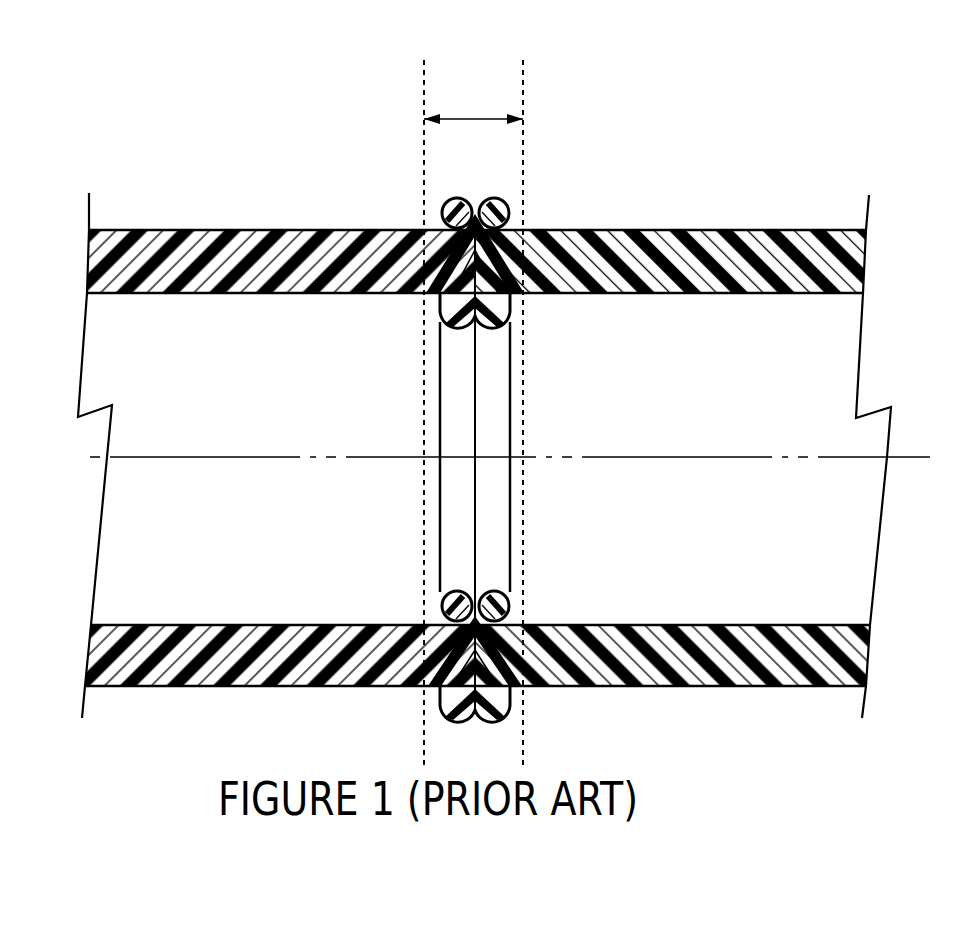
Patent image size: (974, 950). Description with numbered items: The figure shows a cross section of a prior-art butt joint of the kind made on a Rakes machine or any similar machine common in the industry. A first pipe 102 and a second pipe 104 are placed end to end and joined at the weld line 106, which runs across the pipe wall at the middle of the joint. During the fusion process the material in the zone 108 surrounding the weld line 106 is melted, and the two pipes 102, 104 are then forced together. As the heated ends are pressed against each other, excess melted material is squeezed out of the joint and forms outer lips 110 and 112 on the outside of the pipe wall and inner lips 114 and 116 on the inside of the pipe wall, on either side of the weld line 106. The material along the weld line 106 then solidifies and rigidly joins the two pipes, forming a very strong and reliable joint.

The first pipe 102 is at (128, 518).
The second pipe 104 is at (812, 563).
The weld line 106 is at (475, 542).
The zone 108 is at (480, 119).
The outer lip 110 is at (457, 198).
The outer lip 112 is at (497, 198).
The inner lip 114 is at (455, 318).
The inner lip 116 is at (495, 318).